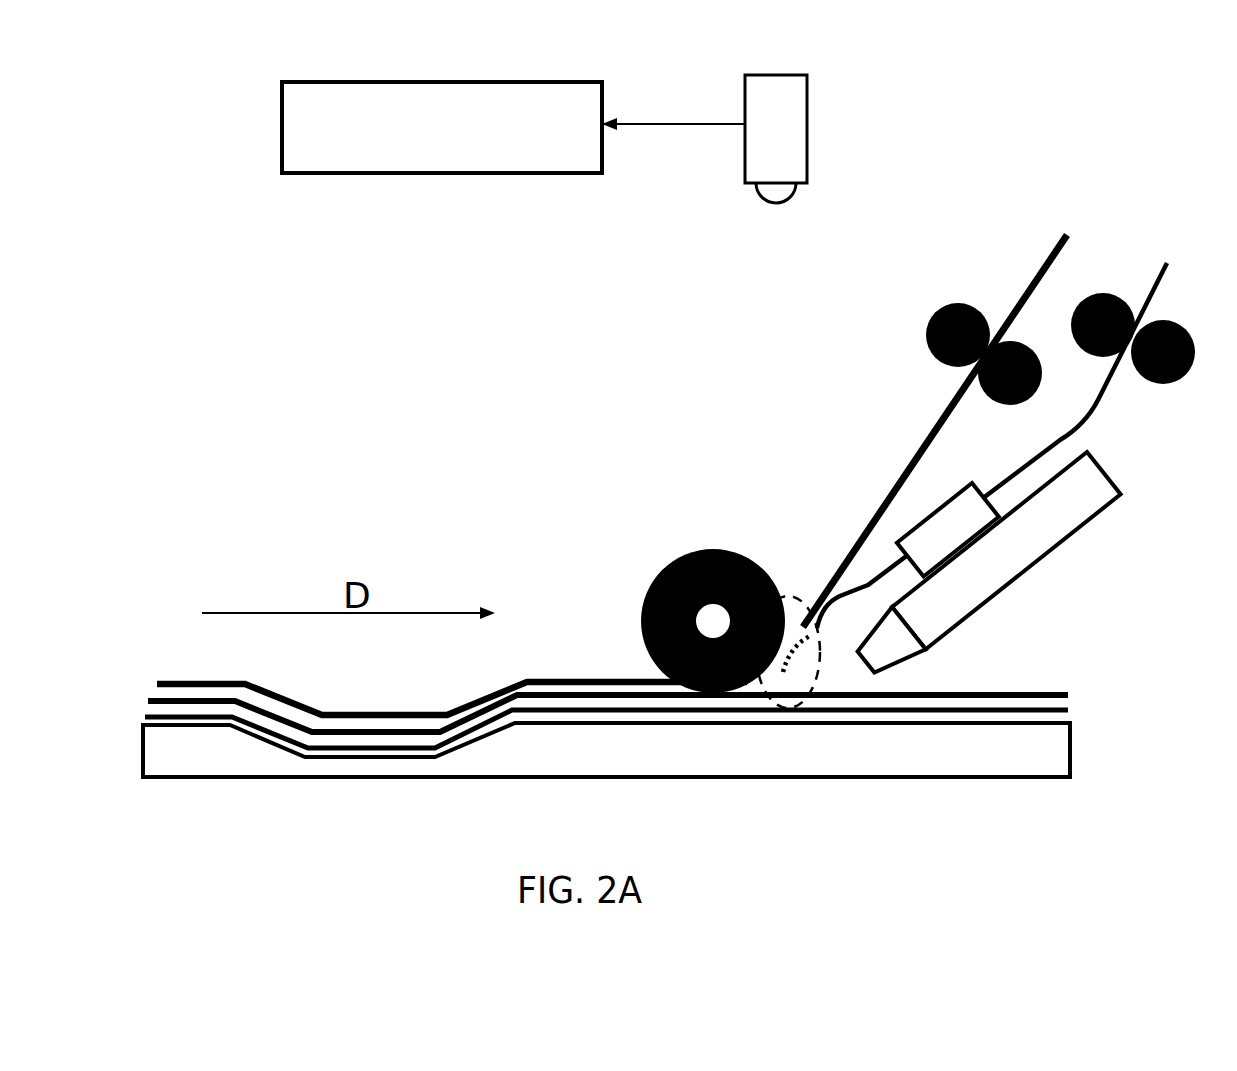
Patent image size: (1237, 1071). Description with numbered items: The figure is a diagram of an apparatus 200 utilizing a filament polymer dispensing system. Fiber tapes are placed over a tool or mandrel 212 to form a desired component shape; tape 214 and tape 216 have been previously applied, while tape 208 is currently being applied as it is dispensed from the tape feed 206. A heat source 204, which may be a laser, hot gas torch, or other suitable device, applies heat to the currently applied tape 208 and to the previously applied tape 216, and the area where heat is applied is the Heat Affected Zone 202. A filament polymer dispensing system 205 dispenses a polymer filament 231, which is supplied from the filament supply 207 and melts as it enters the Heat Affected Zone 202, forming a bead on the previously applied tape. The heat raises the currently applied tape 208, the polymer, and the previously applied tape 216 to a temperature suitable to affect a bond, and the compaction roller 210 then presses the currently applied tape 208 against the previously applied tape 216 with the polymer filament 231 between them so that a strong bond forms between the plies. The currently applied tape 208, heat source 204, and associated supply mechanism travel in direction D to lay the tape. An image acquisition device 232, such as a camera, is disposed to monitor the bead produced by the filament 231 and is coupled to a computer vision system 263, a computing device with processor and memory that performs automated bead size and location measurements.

The apparatus 200 is at (671, 326).
The Heat Affected Zone 202 is at (788, 598).
The heat source 204 is at (1085, 502).
The filament polymer dispensing system 205 is at (958, 512).
The tape feed 206 is at (963, 303).
The filament supply 207 is at (1124, 298).
The currently applied tape 208 is at (907, 460).
The compaction roller 210 is at (657, 582).
The tool (mandrel) 212 is at (845, 757).
The tape 214 is at (1068, 712).
The previously applied tape 216 is at (1005, 692).
The polymer filament 231 is at (855, 588).
The image acquisition device 232 is at (778, 105).
The computer vision system 263 is at (402, 92).